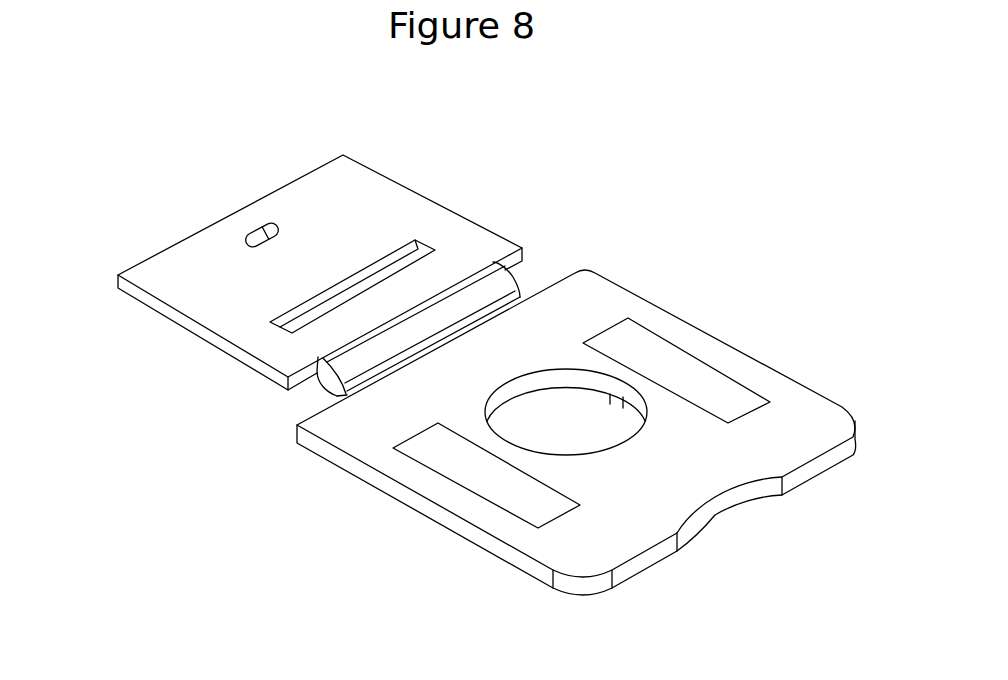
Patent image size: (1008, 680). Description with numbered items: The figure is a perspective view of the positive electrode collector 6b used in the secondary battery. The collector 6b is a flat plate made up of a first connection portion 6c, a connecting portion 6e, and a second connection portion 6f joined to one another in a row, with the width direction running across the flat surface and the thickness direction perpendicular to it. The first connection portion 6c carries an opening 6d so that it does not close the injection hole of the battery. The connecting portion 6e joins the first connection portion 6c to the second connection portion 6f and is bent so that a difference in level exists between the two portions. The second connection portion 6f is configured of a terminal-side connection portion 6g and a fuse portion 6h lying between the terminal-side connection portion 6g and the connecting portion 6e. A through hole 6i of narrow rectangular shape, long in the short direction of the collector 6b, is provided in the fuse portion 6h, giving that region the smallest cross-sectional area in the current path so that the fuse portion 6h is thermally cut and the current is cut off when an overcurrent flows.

The positive electrode collector 6b is at (600, 188).
The first connection portion 6c is at (413, 524).
The opening 6d is at (597, 385).
The connecting portion 6e is at (335, 390).
The second connection portion 6f is at (347, 153).
The terminal-side connection portion 6g is at (190, 285).
The fuse portion 6h is at (260, 348).
The through hole 6i is at (393, 257).